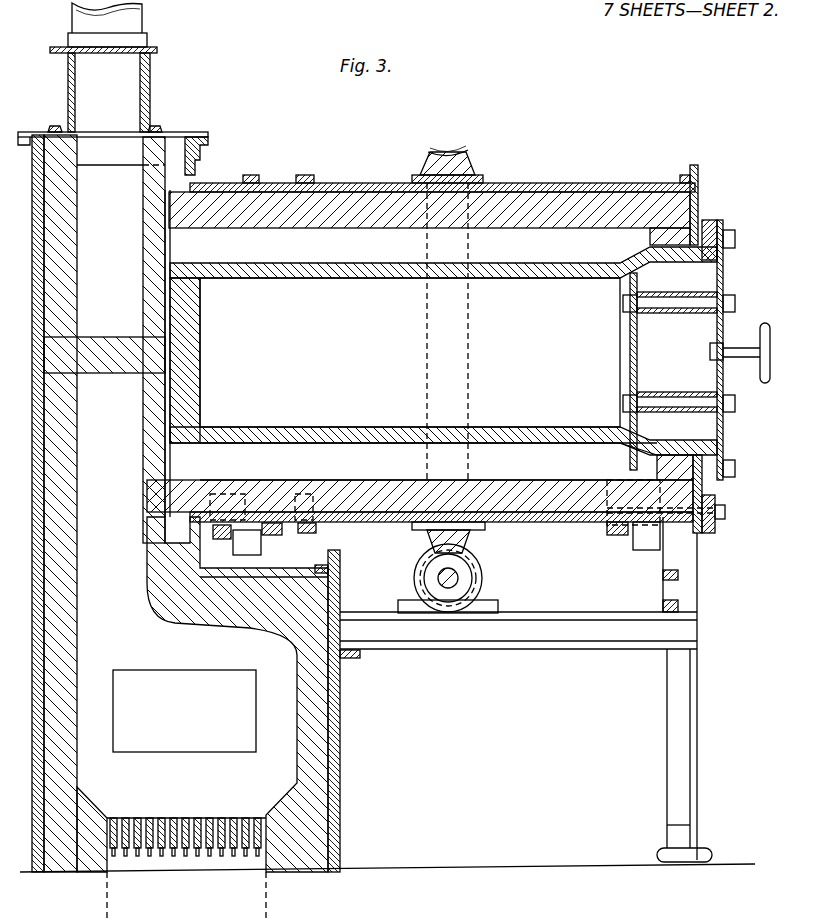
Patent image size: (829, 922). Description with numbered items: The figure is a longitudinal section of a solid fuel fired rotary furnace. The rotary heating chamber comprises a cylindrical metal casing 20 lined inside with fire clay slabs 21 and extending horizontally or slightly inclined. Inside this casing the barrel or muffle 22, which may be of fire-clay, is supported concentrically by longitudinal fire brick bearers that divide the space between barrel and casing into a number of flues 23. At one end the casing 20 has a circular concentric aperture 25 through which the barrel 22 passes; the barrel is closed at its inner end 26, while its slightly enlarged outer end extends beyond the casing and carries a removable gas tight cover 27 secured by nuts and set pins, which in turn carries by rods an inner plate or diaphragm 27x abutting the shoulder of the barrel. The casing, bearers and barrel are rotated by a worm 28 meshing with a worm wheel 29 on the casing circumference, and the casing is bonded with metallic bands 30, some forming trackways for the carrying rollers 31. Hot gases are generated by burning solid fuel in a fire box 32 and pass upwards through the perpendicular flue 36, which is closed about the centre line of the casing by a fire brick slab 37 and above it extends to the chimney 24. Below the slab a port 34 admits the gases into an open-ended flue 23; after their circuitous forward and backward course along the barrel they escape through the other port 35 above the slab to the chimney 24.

The cylindrical metal casing 20 is at (543, 519).
The fire clay slabs 21 is at (530, 488).
The barrel 22 is at (507, 430).
The flues 23 is at (428, 461).
The chimney 24 is at (113, 89).
The circular concentric aperture 25 is at (635, 457).
The inner end 26 is at (198, 343).
The removable gas tight cover 27 is at (723, 325).
The inner plate or diaphragm 27x is at (630, 353).
The worm 28 is at (483, 578).
The worm wheel 29 is at (466, 160).
The metallic bands 30 is at (250, 181).
The carrying rollers 31 is at (638, 551).
The fire box 32 is at (186, 748).
The inlet port 34 is at (148, 463).
The outlet port 35 is at (143, 244).
The perpendicular flue 36 is at (98, 503).
The fire brick slab 37 is at (116, 366).